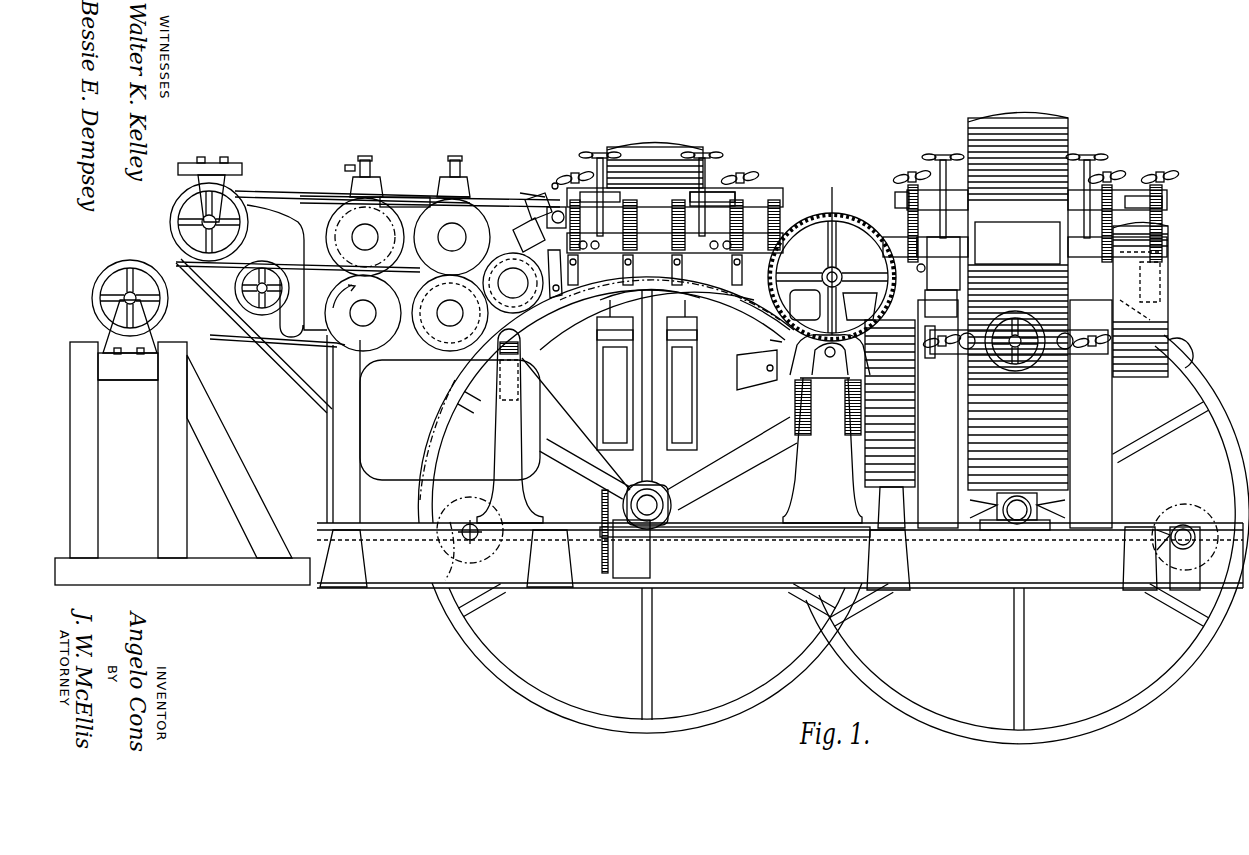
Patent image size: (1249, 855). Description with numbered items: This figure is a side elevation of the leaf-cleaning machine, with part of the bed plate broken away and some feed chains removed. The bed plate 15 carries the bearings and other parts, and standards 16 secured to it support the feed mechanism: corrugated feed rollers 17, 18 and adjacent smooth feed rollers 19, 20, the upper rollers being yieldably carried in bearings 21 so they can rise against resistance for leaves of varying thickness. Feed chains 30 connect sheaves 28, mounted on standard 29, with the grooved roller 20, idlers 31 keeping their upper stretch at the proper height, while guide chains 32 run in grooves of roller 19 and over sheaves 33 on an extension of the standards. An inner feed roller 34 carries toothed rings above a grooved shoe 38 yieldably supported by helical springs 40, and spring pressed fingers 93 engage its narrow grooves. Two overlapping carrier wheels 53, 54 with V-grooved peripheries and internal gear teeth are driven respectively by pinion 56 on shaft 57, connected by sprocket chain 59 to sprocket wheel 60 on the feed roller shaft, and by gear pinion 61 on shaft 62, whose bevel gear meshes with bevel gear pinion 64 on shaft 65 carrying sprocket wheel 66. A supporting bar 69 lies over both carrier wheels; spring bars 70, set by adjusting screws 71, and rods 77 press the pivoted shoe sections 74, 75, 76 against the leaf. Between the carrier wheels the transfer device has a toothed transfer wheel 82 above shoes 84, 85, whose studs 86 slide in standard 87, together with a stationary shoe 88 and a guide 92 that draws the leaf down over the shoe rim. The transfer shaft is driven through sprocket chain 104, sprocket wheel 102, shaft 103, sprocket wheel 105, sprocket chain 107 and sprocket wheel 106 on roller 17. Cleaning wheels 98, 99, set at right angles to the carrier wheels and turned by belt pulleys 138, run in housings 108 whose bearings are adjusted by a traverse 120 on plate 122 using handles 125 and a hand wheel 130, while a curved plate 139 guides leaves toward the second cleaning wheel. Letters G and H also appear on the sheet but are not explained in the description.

The bed plate 15 is at (780, 556).
The standards 16 is at (387, 507).
The corrugated feed roller 17 is at (378, 212).
The corrugated feed roller 18 is at (380, 300).
The smooth feed roller 19 is at (466, 212).
The smooth feed roller 20 is at (425, 325).
The bearings 21 is at (375, 178).
The sheaves 28 is at (158, 305).
The standard 29 is at (222, 449).
The feed chains 30 is at (236, 340).
The idlers 31 is at (274, 300).
The guide chains 32 is at (275, 196).
The sheaves 33 is at (172, 228).
The inner feed roller 34 is at (510, 252).
The shoe 38 is at (510, 418).
The helical springs 40 is at (498, 378).
The first carrier wheel 53 is at (768, 680).
The second carrier wheel 54 is at (910, 690).
The pinion 56 is at (490, 545).
The shaft 57 is at (465, 527).
The sprocket chain 59 is at (430, 396).
The sprocket wheel 60 is at (340, 346).
The gear pinion 61 is at (1185, 508).
The shaft 62 is at (1190, 545).
The bevel gear pinion 64 is at (1150, 525).
The shaft 65 is at (840, 537).
The sprocket wheel 66 is at (603, 560).
The supporting bar 69 is at (897, 244).
The spring bar 70 is at (713, 187).
The adjusting screws 71 is at (593, 160).
The shoe section 74 is at (600, 290).
The shoe section 75 is at (660, 282).
The shoe section 76 is at (748, 300).
The rods 77 is at (585, 174).
The toothed transfer wheel 82 is at (818, 220).
The shoe 84 is at (809, 353).
The shoe 85 is at (847, 355).
The stud 86 is at (782, 370).
The standard 87 is at (822, 450).
The stationary shoe 88 is at (777, 342).
The guide 92 is at (805, 303).
The spring pressed fingers 93 is at (565, 300).
The cleaning wheel 98 is at (662, 142).
The cleaning wheel 99 is at (1010, 113).
The sprocket wheel 102 is at (540, 200).
The shaft 103 is at (552, 208).
The sprocket chain 104 is at (760, 218).
The sprocket wheel 105 is at (556, 184).
The sprocket wheel 106 is at (350, 200).
The sprocket chain 107 is at (525, 193).
The cleaning wheel housings 108 is at (1015, 414).
The traverse 120 is at (958, 358).
The plate 122 is at (1070, 360).
The handles 125 is at (958, 346).
The hand wheel 130 is at (1070, 350).
The belt pulley 138 is at (1168, 308).
The curved plate 139 is at (892, 467).
The gear shaft G is at (829, 259).
The pitman H is at (812, 380).